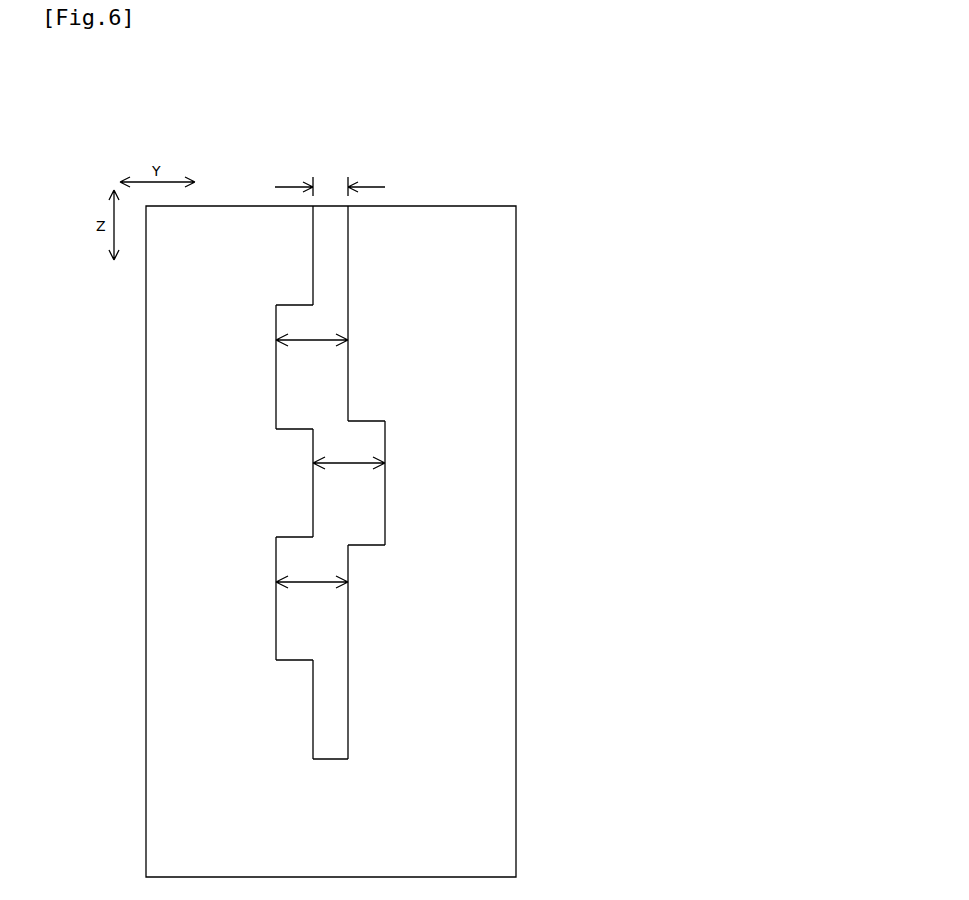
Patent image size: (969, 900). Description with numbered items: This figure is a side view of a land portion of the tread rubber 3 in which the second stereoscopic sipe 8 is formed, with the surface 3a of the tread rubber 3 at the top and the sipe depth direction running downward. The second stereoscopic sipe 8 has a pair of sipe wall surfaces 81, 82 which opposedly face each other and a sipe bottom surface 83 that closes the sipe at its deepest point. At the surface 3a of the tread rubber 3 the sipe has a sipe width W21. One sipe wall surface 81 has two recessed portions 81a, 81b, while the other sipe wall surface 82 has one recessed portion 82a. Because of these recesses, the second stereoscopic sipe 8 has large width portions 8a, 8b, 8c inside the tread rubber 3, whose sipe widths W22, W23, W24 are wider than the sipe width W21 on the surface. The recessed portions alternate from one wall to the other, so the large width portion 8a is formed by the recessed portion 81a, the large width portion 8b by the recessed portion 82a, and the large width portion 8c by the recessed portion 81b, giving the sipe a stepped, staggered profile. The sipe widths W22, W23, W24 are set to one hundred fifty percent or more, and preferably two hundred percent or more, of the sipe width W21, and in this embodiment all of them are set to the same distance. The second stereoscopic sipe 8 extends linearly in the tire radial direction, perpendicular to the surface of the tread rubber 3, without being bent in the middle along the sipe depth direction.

The tread rubber 3 is at (570, 137).
The surface of substrate 3a is at (460, 206).
The second stereoscopic sipe 8 is at (430, 273).
The sipe wall surface 81 is at (326, 245).
The sipe wall surface 82 is at (337, 270).
The large width portion 8a is at (330, 366).
The recessed portion 81a is at (311, 392).
The large width portion 8b is at (340, 493).
The recessed portion 82a is at (352, 523).
The large width portion 8c is at (326, 617).
The recessed portion 81b is at (308, 639).
The sipe bottom surface 83 is at (325, 746).
The sipe width W21 is at (375, 178).
The sipe width W22 is at (320, 340).
The sipe width W23 is at (355, 460).
The sipe width W24 is at (300, 580).